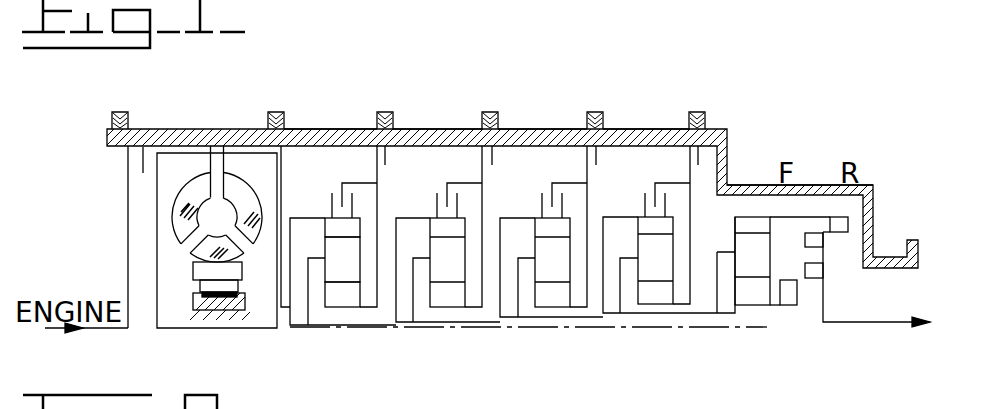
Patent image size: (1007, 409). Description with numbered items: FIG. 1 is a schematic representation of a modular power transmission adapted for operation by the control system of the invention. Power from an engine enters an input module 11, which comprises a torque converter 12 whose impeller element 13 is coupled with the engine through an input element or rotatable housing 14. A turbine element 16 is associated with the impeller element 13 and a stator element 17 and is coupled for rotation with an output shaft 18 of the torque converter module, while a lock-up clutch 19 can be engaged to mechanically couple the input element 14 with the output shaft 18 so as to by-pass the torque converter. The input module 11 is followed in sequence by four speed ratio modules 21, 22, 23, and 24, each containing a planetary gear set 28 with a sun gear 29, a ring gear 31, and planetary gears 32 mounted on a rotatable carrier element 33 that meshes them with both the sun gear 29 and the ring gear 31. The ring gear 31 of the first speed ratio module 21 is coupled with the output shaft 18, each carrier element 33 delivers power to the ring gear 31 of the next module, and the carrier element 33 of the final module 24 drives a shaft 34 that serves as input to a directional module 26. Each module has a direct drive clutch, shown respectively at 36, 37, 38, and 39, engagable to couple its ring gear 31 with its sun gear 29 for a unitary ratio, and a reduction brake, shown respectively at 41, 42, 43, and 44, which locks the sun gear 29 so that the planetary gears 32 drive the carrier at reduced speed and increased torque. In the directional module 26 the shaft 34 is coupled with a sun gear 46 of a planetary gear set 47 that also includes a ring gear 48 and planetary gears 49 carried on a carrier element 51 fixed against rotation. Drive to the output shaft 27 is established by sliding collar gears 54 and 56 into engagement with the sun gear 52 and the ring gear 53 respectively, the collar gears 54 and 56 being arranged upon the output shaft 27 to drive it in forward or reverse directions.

The input module 11 is at (157, 127).
The torque converter 12 is at (152, 192).
The impeller element 13 is at (245, 203).
The input element 14 is at (214, 146).
The turbine element 16 is at (185, 240).
The stator element 17 is at (237, 246).
The output shaft 18 is at (190, 330).
The lock-up clutch 19 is at (158, 156).
The first speed ratio module 21 is at (330, 127).
The second speed ratio module 22 is at (462, 127).
The third speed ratio module 23 is at (562, 127).
The fourth speed ratio module 24 is at (663, 127).
The directional module 26 is at (813, 183).
The output shaft 27 is at (887, 323).
The planetary gear set 28 is at (348, 310).
The sun gear 29 is at (332, 297).
The ring gear 31 is at (358, 227).
The planetary gears 32 is at (350, 270).
The carrier element 33 is at (320, 258).
The shaft 34 is at (640, 313).
The direct drive clutch 36 is at (327, 207).
The direct drive clutch 37 is at (433, 210).
The direct drive clutch 38 is at (538, 208).
The direct drive clutch 39 is at (642, 203).
The reduction brake 41 is at (373, 157).
The reduction brake 42 is at (483, 155).
The reduction brake 43 is at (582, 153).
The reduction brake 44 is at (688, 155).
The sun gear 46 is at (755, 292).
The planetary gear set 47 is at (768, 308).
The ring gear 48 is at (752, 224).
The planetary gears 49 is at (743, 268).
The carrier element 51 is at (735, 258).
The sun gear 52 is at (788, 293).
The ring gear 53 is at (848, 222).
The collar gear 54 is at (815, 275).
The collar gear 56 is at (816, 240).